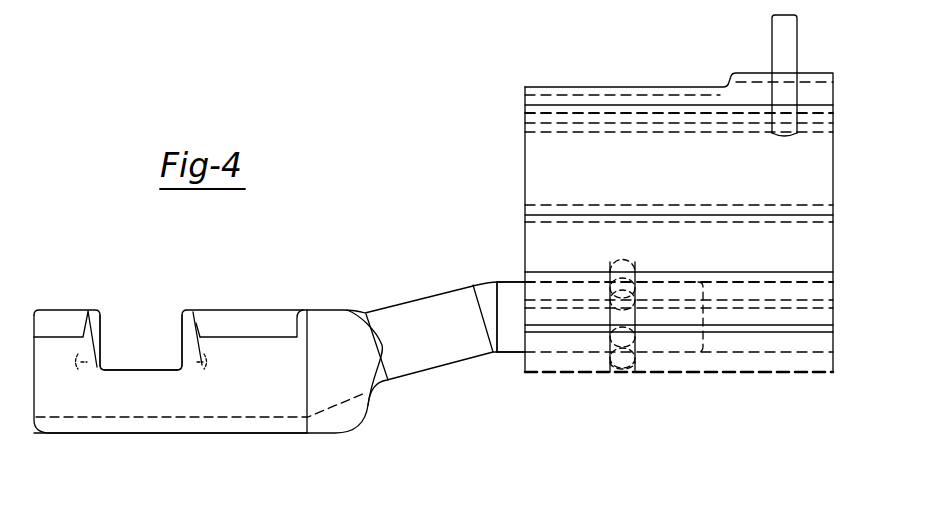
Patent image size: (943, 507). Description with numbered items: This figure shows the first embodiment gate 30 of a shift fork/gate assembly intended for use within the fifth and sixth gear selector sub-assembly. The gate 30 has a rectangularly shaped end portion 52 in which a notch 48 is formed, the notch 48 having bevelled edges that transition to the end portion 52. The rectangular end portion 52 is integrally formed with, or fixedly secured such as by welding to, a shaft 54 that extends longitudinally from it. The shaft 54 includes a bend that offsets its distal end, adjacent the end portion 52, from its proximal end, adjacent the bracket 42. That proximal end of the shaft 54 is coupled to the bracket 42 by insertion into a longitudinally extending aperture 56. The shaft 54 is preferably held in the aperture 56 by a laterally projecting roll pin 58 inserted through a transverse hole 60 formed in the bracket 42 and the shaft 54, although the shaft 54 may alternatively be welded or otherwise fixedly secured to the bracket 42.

The gate 30 is at (80, 388).
The bracket 42 is at (778, 170).
The notch 48 is at (121, 330).
The end portion 52 is at (255, 377).
The shaft 54 is at (437, 333).
The aperture 56 is at (573, 360).
The roll pin 58 is at (623, 370).
The transverse hole 60 is at (610, 370).